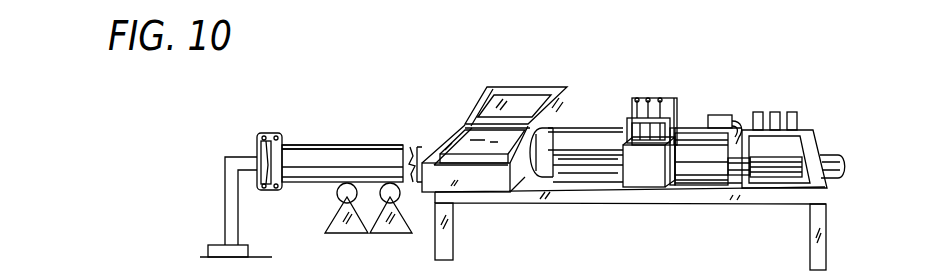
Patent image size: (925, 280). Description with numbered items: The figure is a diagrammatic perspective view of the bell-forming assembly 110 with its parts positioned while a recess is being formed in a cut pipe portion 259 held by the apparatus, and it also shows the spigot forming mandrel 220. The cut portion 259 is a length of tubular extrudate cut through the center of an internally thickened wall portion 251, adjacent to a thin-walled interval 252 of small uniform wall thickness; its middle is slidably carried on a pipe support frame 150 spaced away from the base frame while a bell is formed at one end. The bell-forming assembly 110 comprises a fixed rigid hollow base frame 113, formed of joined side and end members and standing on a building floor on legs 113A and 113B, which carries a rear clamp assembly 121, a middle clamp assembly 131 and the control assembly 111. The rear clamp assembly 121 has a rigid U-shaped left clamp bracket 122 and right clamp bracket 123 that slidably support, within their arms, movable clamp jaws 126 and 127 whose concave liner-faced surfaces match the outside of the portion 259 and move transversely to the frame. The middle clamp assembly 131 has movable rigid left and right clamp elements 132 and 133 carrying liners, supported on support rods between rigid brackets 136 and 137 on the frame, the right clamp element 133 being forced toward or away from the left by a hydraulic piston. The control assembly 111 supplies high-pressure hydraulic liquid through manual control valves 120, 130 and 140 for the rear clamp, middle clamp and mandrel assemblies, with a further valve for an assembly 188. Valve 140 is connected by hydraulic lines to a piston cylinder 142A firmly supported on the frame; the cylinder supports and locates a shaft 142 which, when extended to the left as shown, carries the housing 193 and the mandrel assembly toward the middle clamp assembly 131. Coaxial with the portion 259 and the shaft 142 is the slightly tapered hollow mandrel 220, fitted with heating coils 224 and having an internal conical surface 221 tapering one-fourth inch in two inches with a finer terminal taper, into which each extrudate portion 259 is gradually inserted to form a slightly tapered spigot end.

The bell-forming assembly 110 is at (587, 233).
The bell-former control assembly 111 is at (832, 79).
The base frame 113 is at (637, 196).
The leg 113A is at (450, 248).
The leg 113B is at (815, 242).
The control valve 120 is at (746, 153).
The rear clamp assembly 121 is at (538, 66).
The left clamp bracket 122 is at (532, 98).
The right clamp bracket 123 is at (473, 195).
The left clamp jaw 126 is at (500, 103).
The right clamp jaw 127 is at (472, 140).
The control valve 130 is at (757, 138).
The middle clamp assembly 131 is at (677, 75).
The left clamp element 132 is at (640, 112).
The right clamp element 133 is at (632, 135).
The bracket 136 is at (668, 98).
The bracket 137 is at (630, 165).
The control valve 140 is at (797, 113).
The shaft 142 is at (776, 155).
The piston cylinder 142A is at (830, 162).
The pipe support frame 150 is at (324, 217).
The assembly 188 is at (722, 118).
The housing 193 is at (702, 178).
The spigot forming mandrel 220 is at (253, 147).
The internal conical surface 221 is at (270, 188).
The heating coils 224 is at (267, 143).
The internally thickened wall portion 251 is at (288, 150).
The thin-wall interval 252 is at (378, 155).
The cut portion 259 is at (393, 111).